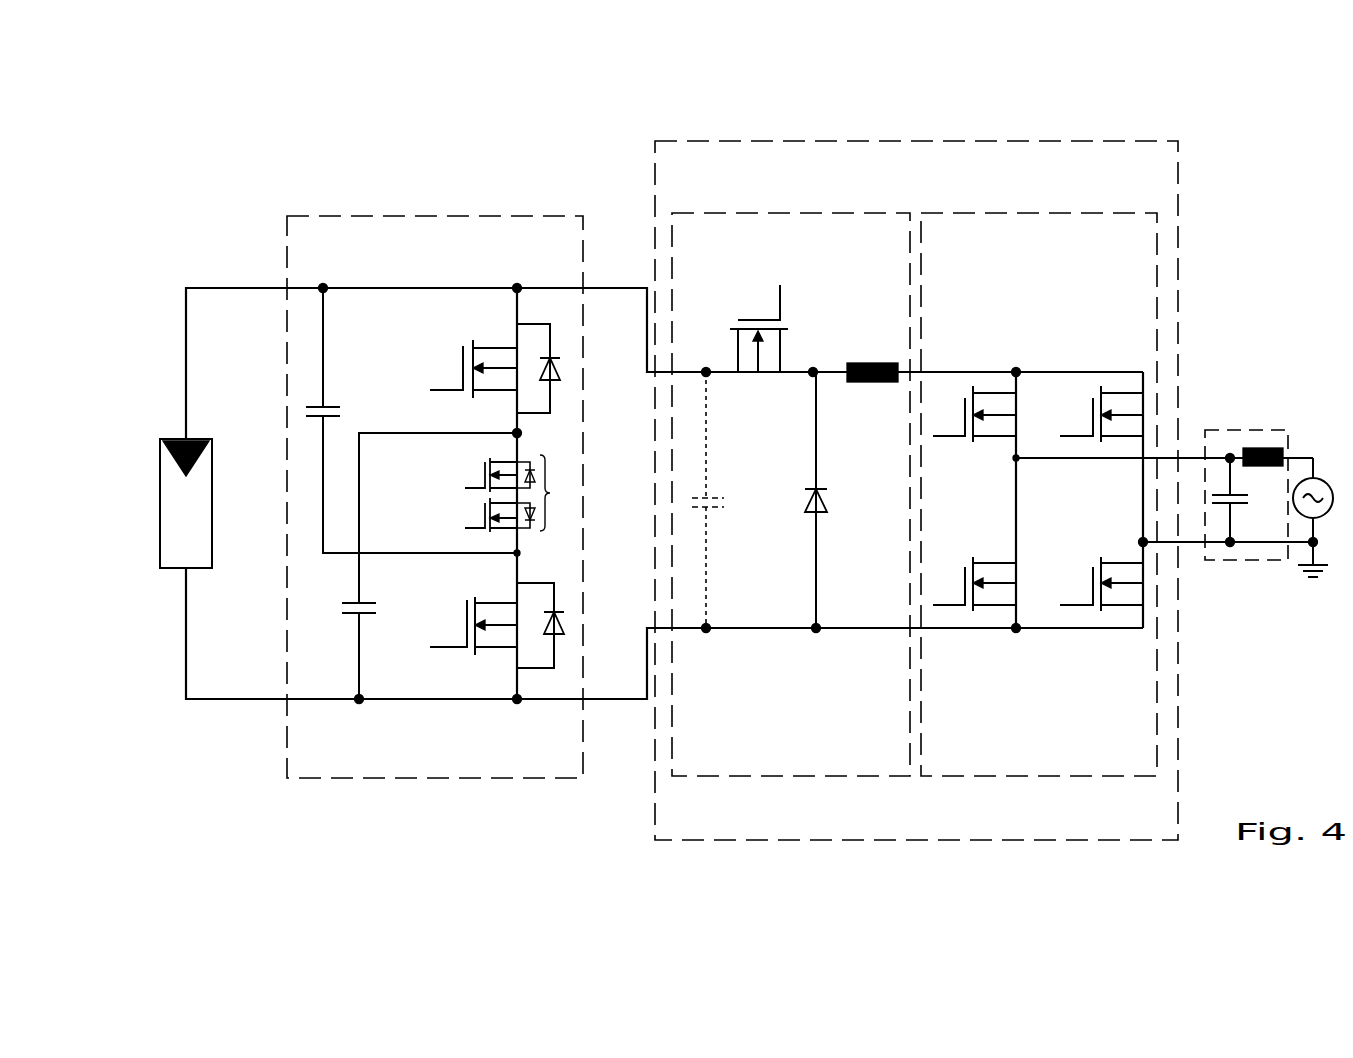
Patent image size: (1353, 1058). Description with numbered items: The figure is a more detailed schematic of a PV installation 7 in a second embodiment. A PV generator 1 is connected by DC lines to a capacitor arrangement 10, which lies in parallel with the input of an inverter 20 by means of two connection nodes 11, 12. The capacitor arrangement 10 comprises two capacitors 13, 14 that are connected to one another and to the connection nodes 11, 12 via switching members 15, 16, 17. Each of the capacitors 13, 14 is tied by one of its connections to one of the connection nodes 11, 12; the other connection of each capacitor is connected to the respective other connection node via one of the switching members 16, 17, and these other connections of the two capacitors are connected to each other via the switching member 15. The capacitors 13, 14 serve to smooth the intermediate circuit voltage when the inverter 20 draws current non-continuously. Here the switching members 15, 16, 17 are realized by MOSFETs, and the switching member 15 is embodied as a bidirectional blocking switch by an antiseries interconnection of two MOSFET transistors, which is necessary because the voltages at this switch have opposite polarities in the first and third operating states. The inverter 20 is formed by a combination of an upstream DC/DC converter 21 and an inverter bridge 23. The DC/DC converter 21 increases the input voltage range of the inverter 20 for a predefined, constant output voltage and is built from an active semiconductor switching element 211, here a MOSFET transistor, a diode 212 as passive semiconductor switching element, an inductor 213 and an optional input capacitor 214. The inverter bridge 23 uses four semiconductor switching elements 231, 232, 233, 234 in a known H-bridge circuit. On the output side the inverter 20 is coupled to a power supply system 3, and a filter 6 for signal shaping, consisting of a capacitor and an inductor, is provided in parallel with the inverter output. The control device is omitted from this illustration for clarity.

The PV generator 1 is at (158, 507).
The power supply system 3 is at (1323, 478).
The filter 6 is at (1253, 428).
The PV installation 7 is at (540, 145).
The capacitor arrangement 10 is at (398, 213).
The connection node 11 is at (402, 278).
The connection node 12 is at (408, 703).
The capacitor 13 is at (312, 400).
The capacitor 14 is at (350, 615).
The switching member 15 is at (550, 495).
The switching member 16 is at (458, 362).
The switching member 17 is at (468, 620).
The inverter 20 is at (866, 141).
The DC/DC converter 21 is at (800, 211).
The inverter bridge 23 is at (1002, 212).
The active semiconductor switching element 211 is at (782, 305).
The diode 212 is at (828, 498).
The inductor 213 is at (857, 360).
The input capacitor 214 is at (713, 497).
The semiconductor switching element 231 is at (985, 392).
The semiconductor switching element 232 is at (992, 607).
The semiconductor switching element 233 is at (1097, 393).
The semiconductor switching element 234 is at (1125, 607).